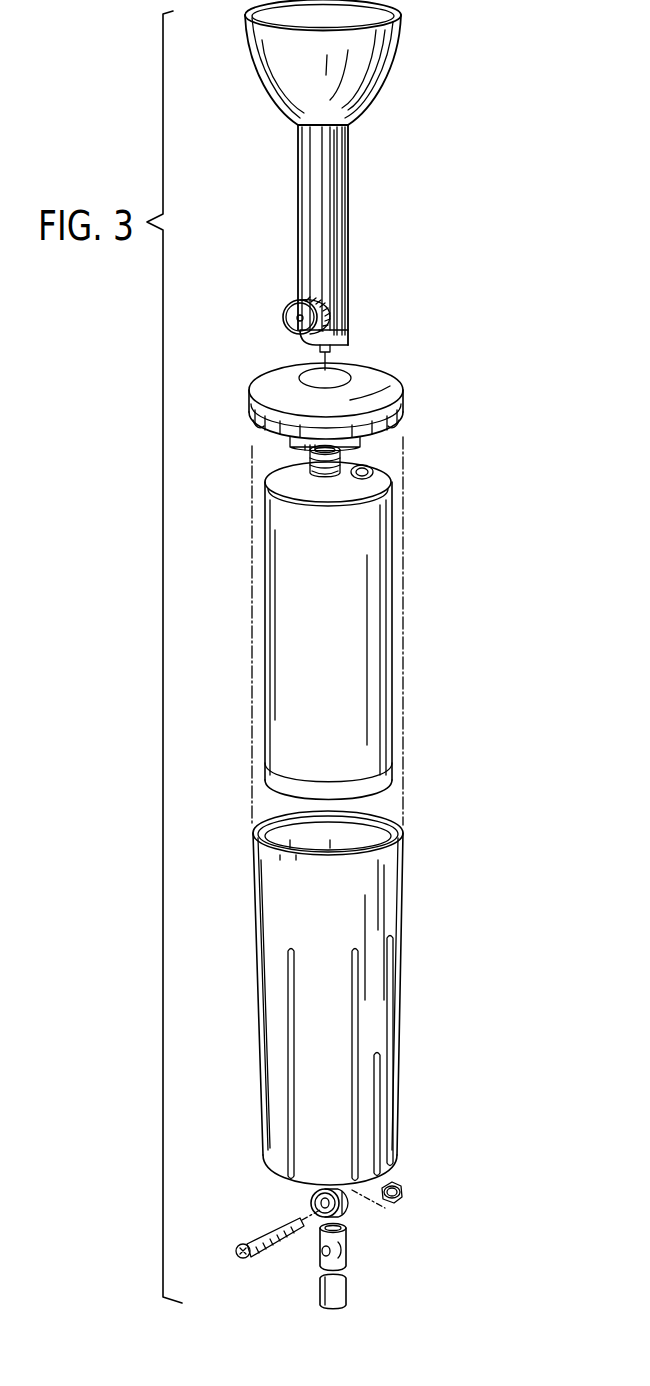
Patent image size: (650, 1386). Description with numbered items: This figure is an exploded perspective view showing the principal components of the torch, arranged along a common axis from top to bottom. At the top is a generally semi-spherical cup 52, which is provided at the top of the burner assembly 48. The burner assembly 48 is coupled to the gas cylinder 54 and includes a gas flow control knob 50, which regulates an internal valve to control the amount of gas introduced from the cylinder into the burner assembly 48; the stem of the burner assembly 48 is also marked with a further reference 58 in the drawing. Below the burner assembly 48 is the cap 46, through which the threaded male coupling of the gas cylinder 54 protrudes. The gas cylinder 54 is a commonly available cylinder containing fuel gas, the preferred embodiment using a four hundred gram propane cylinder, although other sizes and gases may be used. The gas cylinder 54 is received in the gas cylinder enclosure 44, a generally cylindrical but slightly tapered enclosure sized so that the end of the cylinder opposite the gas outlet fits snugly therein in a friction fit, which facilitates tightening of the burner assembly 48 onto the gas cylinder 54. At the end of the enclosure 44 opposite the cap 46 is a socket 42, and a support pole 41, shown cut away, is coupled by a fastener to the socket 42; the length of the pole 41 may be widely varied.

The support pole 41 is at (347, 1254).
The socket 42 is at (350, 1213).
The gas cylinder enclosure 44 is at (385, 910).
The cap 46 is at (383, 386).
The burner assembly 48 is at (334, 208).
The gas flow control knob 50 is at (290, 313).
The cup 52 is at (358, 71).
The gas cylinder 54 is at (372, 632).
The stem rib 58 is at (336, 245).